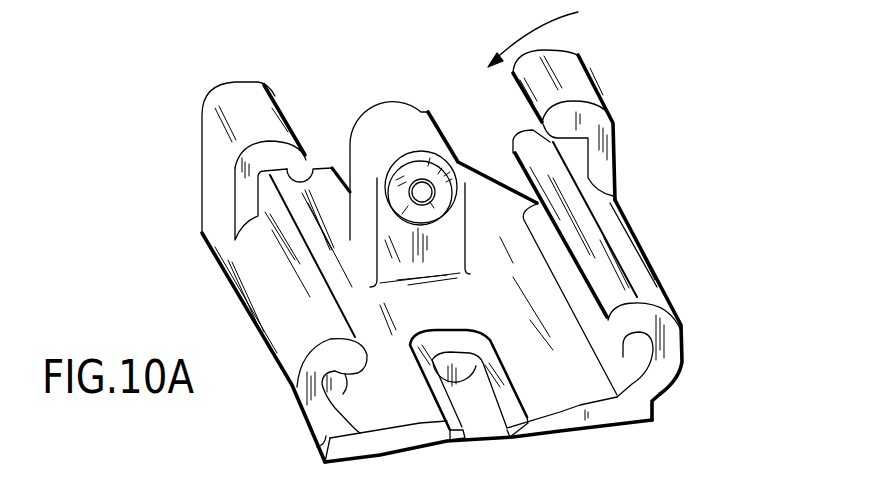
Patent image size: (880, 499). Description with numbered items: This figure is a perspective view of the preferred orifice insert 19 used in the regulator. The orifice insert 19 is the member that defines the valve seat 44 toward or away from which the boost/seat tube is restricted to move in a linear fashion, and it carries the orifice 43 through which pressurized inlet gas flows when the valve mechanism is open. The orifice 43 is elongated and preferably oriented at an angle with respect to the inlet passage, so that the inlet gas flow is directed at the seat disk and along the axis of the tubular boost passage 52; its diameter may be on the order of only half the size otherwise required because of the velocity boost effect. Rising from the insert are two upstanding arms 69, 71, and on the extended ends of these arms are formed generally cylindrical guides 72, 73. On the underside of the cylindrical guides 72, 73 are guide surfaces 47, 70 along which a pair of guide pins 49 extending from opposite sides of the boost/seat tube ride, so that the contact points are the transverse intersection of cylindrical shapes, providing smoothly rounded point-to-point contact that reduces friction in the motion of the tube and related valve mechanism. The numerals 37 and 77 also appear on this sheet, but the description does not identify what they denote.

The orifice insert member 19 is at (563, 14).
The mounting element 37 is at (416, 414).
The orifice 43 is at (417, 183).
The valve seat 44 is at (443, 175).
The guide surface 47 is at (343, 383).
The guide pins 49 is at (431, 231).
The tubular passage 52 is at (533, 33).
The upstanding arm 69 is at (215, 153).
The guide surface 70 is at (312, 172).
The upstanding arm 71 is at (297, 388).
The cylindrical guide 72 is at (310, 263).
The cylindrical guide 73 is at (258, 100).
The retainer 77 is at (597, 493).